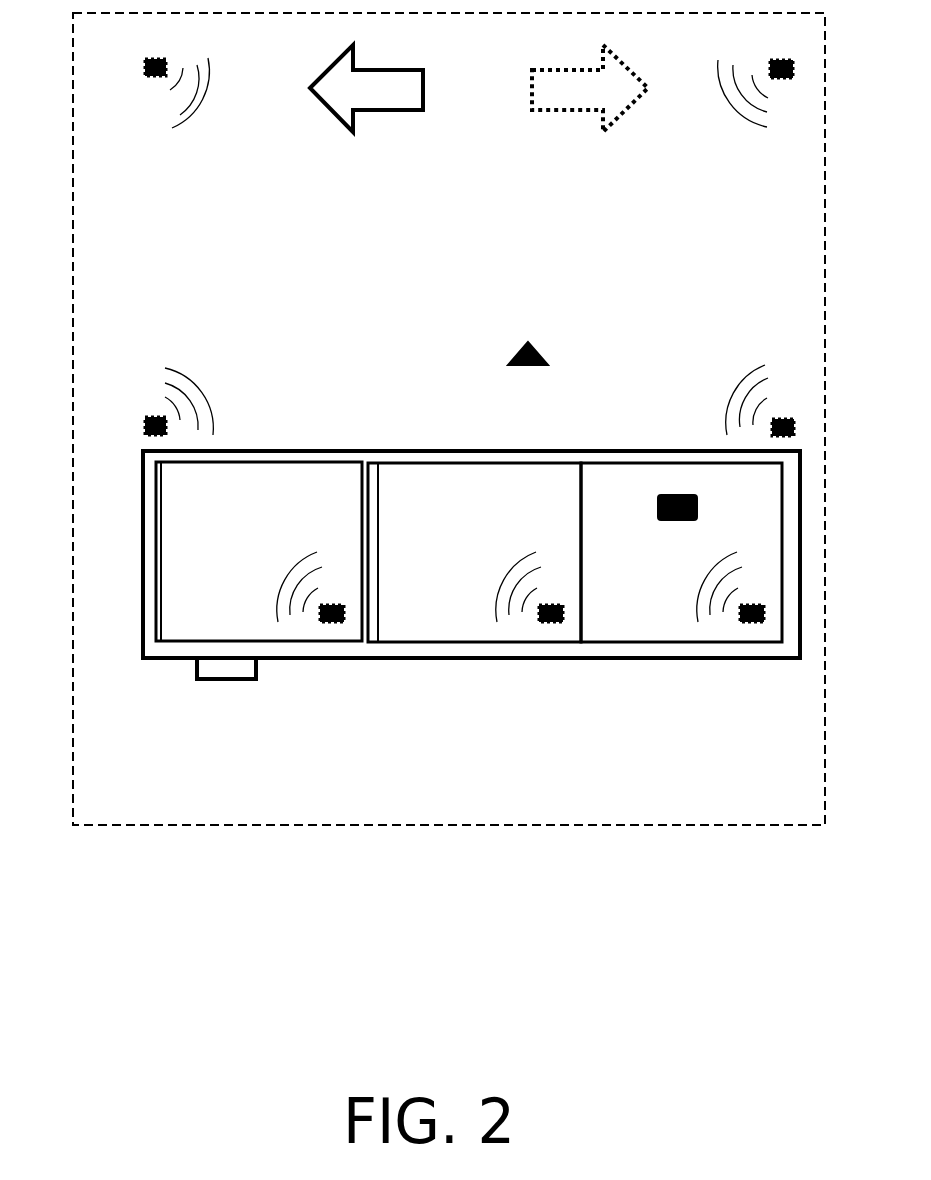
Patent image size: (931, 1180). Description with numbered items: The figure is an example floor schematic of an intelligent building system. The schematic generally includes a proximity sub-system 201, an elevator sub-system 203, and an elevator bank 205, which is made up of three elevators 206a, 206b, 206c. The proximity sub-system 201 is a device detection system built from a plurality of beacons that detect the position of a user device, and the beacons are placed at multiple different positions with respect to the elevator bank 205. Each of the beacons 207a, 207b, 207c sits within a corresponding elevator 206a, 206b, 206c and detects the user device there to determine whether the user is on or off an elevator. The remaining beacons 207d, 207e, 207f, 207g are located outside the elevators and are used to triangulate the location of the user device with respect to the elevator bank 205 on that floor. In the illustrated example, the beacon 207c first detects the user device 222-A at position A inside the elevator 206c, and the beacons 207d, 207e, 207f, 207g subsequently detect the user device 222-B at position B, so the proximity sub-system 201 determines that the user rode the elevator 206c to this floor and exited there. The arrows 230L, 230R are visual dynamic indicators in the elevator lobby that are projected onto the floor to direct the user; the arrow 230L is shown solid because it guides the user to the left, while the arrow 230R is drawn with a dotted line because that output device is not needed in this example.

The proximity sub-system 201 is at (125, 827).
The elevator sub-system 203 is at (227, 682).
The elevator bank 205 is at (170, 660).
The elevator 206a is at (327, 643).
The elevator 206b is at (486, 644).
The elevator 206c is at (622, 644).
The beacon 207a is at (337, 625).
The beacon 207b is at (552, 625).
The beacon 207c is at (752, 625).
The beacon 207d is at (781, 415).
The beacon 207e is at (781, 82).
The beacon 207f is at (143, 77).
The beacon 207g is at (141, 415).
The user device at position A 222-A is at (659, 518).
The user device at position B 222-B is at (512, 366).
The arrow 230L is at (385, 112).
The arrow 230R is at (565, 112).